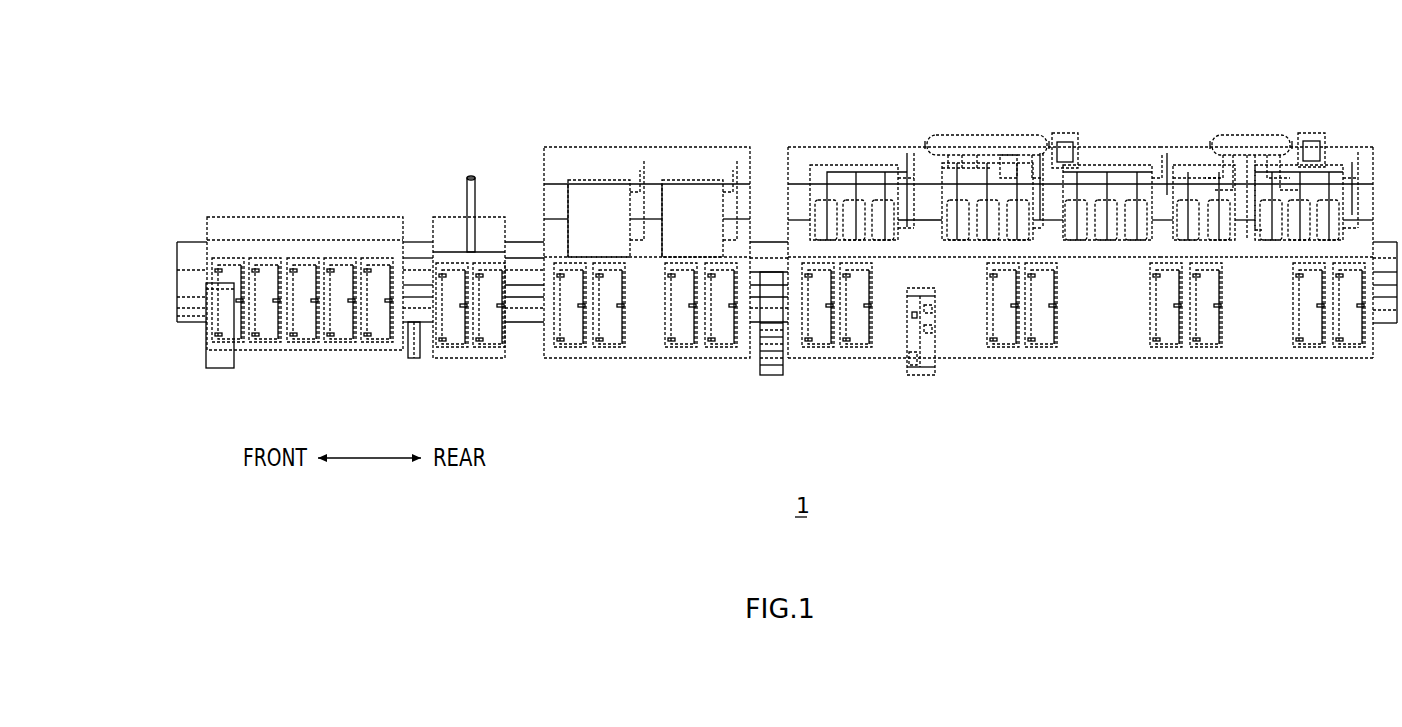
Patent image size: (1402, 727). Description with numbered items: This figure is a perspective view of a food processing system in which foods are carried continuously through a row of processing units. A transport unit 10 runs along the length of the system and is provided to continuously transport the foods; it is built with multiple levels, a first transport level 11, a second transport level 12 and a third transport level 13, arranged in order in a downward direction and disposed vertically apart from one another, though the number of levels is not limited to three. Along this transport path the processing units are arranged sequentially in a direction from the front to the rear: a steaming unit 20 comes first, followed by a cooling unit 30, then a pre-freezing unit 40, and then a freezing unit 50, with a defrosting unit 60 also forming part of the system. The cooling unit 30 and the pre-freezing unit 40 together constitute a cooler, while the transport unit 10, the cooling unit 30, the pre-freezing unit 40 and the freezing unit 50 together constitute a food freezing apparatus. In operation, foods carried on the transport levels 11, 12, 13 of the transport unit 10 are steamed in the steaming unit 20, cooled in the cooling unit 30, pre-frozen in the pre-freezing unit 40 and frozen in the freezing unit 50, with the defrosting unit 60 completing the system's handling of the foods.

The transport unit 10 is at (148, 281).
The first transport level 11 is at (180, 268).
The second transport level 12 is at (179, 296).
The third transport level 13 is at (179, 317).
The steaming unit 20 is at (310, 193).
The cooling unit 30 is at (489, 192).
The pre-freezing unit 40 is at (681, 136).
The freezing unit 50 is at (1119, 164).
The defrosting unit 60 is at (1254, 123).